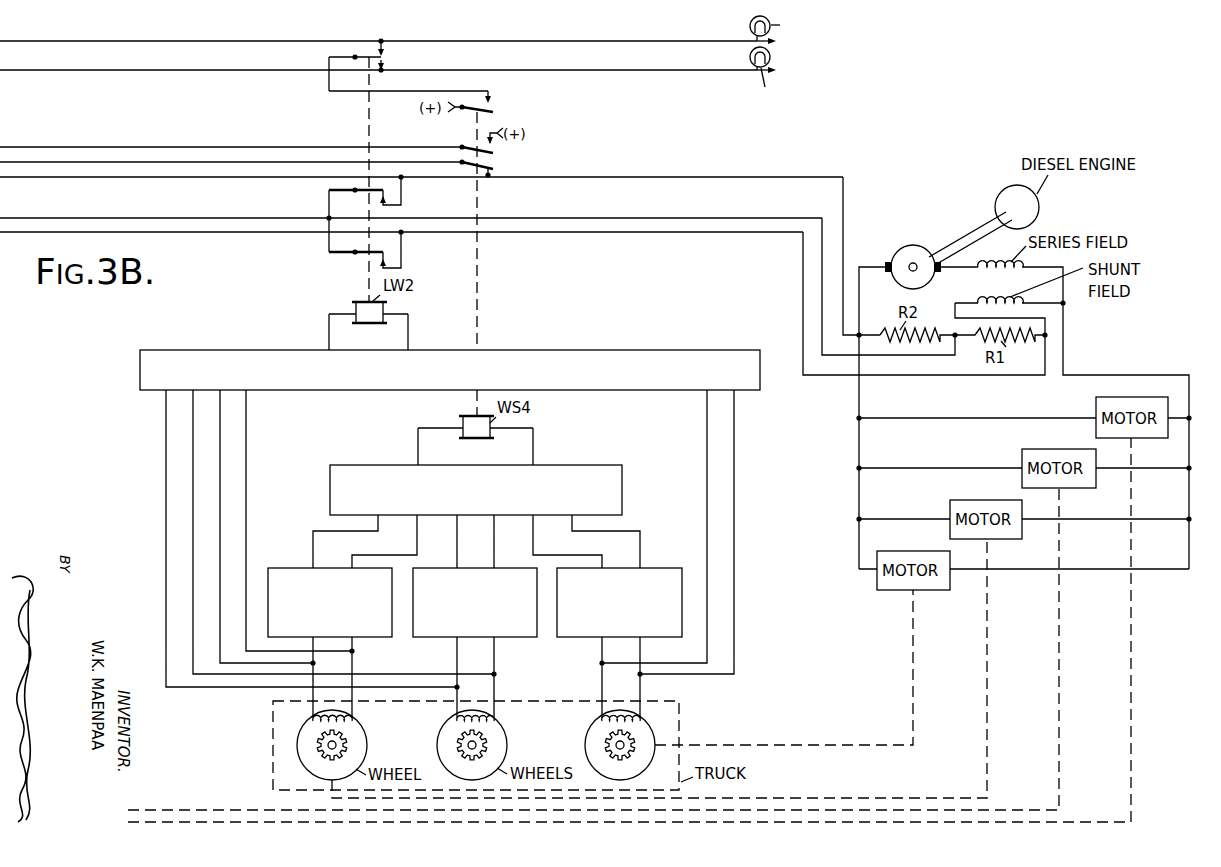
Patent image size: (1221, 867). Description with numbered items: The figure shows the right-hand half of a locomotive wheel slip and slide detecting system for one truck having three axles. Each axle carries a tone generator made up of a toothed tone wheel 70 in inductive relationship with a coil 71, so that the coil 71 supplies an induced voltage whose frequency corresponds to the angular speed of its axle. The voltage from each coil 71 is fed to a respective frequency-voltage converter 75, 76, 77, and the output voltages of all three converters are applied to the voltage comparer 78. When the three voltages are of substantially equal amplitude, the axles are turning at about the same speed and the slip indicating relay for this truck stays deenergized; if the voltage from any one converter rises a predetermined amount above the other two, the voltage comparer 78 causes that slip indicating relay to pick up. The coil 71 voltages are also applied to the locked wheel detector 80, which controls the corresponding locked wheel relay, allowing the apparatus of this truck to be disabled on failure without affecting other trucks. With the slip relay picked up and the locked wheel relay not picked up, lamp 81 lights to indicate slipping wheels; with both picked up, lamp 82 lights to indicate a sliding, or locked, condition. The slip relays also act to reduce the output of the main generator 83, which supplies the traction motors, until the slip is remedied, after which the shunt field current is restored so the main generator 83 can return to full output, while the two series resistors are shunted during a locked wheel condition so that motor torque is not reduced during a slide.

The toothed tone wheel 70 is at (347, 742).
The coil 71 is at (312, 721).
The frequency-voltage converter 75 is at (290, 566).
The frequency-voltage converter 76 is at (429, 566).
The frequency-voltage converter 77 is at (656, 567).
The voltage comparer 78 is at (622, 499).
The locked wheel detector 80 is at (195, 350).
The lamp 81 is at (749, 26).
The lamp 82 is at (749, 57).
The main generator 83 is at (909, 246).